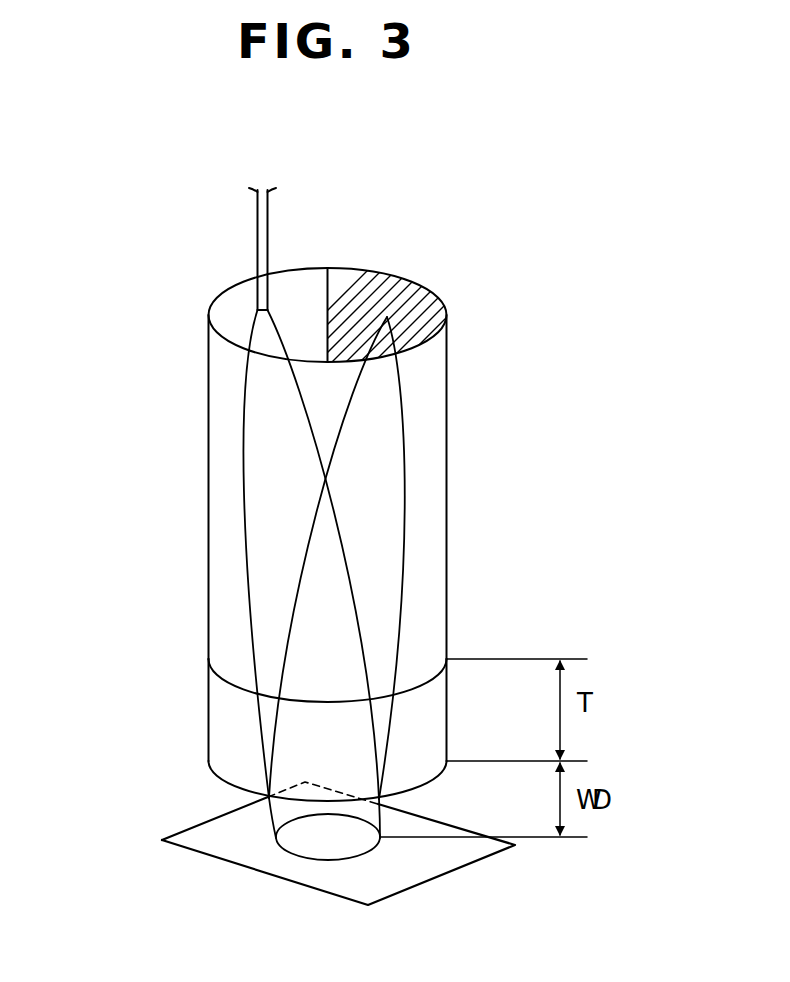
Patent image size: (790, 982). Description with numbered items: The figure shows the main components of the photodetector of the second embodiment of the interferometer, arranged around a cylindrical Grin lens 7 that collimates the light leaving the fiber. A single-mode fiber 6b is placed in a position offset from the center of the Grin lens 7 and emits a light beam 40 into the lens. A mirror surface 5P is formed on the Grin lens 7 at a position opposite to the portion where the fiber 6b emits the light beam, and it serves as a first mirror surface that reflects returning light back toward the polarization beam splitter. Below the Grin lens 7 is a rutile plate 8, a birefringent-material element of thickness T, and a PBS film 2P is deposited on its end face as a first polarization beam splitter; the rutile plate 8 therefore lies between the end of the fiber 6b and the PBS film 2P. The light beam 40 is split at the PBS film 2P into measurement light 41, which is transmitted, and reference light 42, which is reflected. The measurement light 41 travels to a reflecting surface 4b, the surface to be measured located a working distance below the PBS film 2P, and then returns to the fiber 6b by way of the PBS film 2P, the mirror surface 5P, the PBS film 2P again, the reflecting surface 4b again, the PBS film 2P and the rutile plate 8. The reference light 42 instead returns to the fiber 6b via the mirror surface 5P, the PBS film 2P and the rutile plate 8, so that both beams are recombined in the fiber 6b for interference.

The Grin lens 7 is at (218, 430).
The rutile plate 8 is at (232, 730).
The PBS film 2P is at (215, 777).
The mirror surface 5P is at (384, 290).
The single-mode fiber 6b is at (256, 229).
The light beam 40 is at (247, 543).
The reference light 42 is at (407, 518).
The reflecting surface 4b is at (207, 843).
The measurement light 41 is at (272, 822).